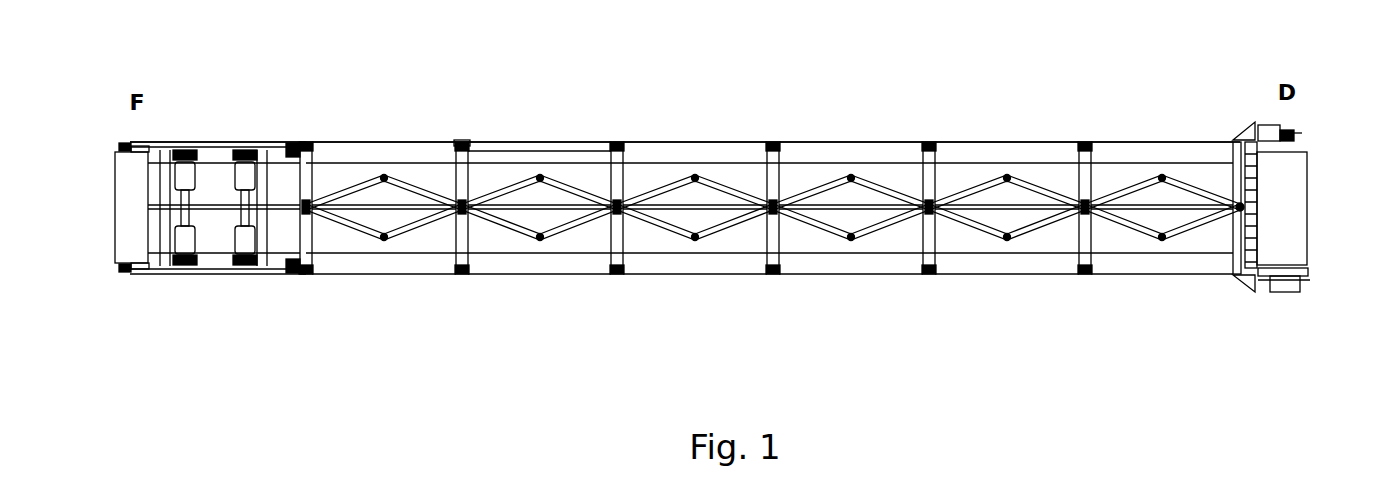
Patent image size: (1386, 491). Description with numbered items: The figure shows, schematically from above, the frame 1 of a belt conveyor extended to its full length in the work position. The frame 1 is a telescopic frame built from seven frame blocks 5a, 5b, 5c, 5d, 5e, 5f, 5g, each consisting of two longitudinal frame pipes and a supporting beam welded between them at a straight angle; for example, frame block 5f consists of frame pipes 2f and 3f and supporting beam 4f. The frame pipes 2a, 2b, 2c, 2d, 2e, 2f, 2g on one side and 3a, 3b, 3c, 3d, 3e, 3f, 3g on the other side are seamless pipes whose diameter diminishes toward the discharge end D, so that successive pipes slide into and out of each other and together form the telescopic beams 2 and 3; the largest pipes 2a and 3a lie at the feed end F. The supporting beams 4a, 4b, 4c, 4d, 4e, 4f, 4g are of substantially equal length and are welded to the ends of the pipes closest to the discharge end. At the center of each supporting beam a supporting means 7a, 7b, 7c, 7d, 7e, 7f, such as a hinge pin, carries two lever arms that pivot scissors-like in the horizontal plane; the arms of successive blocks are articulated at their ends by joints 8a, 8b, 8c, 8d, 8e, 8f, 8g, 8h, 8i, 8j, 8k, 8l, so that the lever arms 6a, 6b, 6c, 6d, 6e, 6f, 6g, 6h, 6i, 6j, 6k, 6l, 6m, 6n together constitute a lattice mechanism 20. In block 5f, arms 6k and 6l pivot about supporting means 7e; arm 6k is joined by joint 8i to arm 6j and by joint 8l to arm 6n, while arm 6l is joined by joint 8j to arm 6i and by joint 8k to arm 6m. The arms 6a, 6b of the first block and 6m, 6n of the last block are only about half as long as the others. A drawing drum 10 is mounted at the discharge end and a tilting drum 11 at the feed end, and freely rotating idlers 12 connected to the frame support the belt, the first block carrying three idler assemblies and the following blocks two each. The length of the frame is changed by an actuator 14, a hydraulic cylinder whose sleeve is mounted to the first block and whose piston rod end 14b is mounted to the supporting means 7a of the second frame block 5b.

The frame 1 is at (933, 62).
The telescopic beam 2 is at (790, 153).
The frame pipe 2a is at (200, 150).
The frame pipe 2b is at (412, 158).
The frame pipe 2c is at (568, 158).
The frame pipe 2d is at (722, 153).
The frame pipe 2e is at (883, 155).
The frame pipe 2f is at (1030, 153).
The frame pipe 2g is at (1190, 157).
The telescopic beam 3 is at (820, 258).
The frame pipe 3a is at (228, 258).
The frame pipe 3b is at (407, 277).
The frame pipe 3c is at (557, 277).
The frame pipe 3d is at (717, 277).
The frame pipe 3e is at (868, 275).
The frame pipe 3f is at (1030, 275).
The frame pipe 3g is at (1183, 272).
The supporting beam 4a is at (310, 275).
The supporting beam 4b is at (461, 272).
The supporting beam 4c is at (617, 272).
The supporting beam 4d is at (773, 272).
The supporting beam 4e is at (926, 272).
The supporting beam 4f is at (1090, 270).
The supporting beam 4g is at (1238, 272).
The frame block 5a is at (213, 178).
The frame block 5b is at (384, 203).
The frame block 5c is at (539, 205).
The frame block 5d is at (695, 206).
The frame block 5e is at (851, 205).
The frame block 5f is at (1007, 205).
The frame block 5g is at (1226, 200).
The lever arm 6a is at (330, 190).
The lever arm 6b is at (338, 240).
The lever arm 6c is at (492, 240).
The lever arm 6d is at (490, 185).
The lever arm 6e is at (645, 242).
The lever arm 6f is at (645, 185).
The lever arm 6g is at (800, 242).
The lever arm 6h is at (800, 185).
The lever arm 6i is at (957, 242).
The lever arm 6j is at (955, 185).
The lever arm 6k is at (1118, 223).
The lever arm 6l is at (1122, 185).
The lever arm 6m is at (1200, 180).
The lever arm 6n is at (1218, 220).
The supporting means 7a is at (407, 258).
The supporting means 7b is at (590, 258).
The supporting means 7c is at (747, 258).
The supporting means 7d is at (897, 258).
The supporting means 7e is at (1062, 258).
The supporting means 7f is at (1245, 207).
The joint 8a is at (388, 173).
The joint 8b is at (381, 243).
The joint 8c is at (540, 173).
The joint 8d is at (538, 242).
The joint 8e is at (695, 173).
The joint 8f is at (695, 242).
The joint 8g is at (852, 173).
The joint 8h is at (851, 242).
The joint 8i is at (1008, 173).
The joint 8j is at (1006, 242).
The joint 8k is at (1163, 173).
The joint 8l is at (1162, 242).
The drawing drum 10 is at (1292, 233).
The tilting drum 11 is at (128, 274).
The idler 12 is at (262, 150).
The actuator 14 is at (228, 160).
The end of the piston rod 14b is at (470, 145).
The lattice mechanism 20 is at (582, 157).